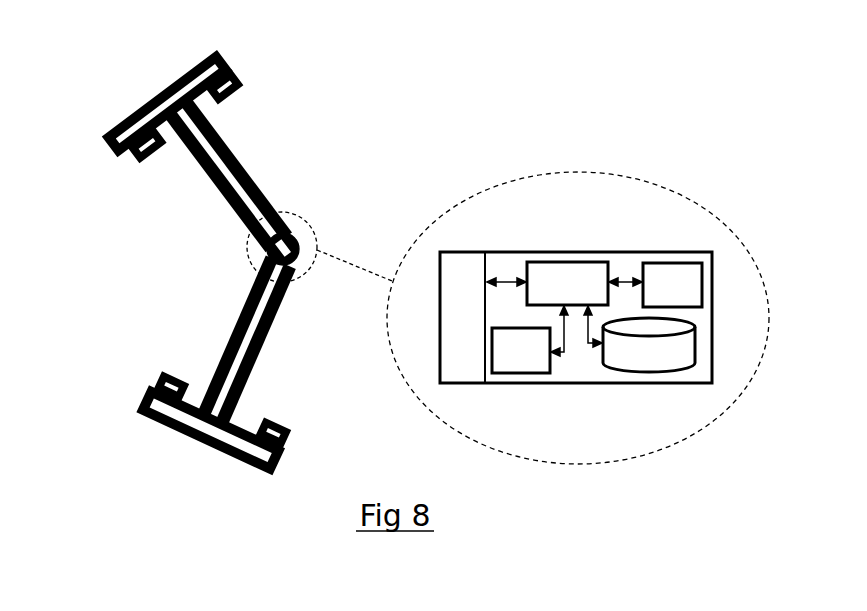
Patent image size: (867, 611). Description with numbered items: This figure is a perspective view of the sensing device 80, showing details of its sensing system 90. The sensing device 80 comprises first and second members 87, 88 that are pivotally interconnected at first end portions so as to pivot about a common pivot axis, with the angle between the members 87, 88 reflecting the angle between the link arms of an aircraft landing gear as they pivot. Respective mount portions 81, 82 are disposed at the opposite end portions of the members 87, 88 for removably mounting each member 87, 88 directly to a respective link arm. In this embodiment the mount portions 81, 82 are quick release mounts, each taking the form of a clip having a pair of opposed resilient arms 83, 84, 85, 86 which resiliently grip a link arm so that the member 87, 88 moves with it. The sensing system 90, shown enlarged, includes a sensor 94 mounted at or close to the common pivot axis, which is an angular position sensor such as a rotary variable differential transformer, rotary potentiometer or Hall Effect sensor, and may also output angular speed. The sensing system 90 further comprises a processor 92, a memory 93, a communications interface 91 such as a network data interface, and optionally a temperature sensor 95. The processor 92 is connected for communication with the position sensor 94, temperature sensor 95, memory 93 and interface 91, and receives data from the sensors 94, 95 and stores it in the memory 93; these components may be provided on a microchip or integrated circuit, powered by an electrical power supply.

The sensing device 80 is at (134, 236).
The mount portion 81 is at (148, 103).
The mount portion 82 is at (172, 420).
The resilient arm 83 is at (200, 72).
The resilient arm 84 is at (145, 147).
The resilient arm 85 is at (274, 462).
The resilient arm 86 is at (172, 383).
The first member 87 is at (233, 170).
The second member 88 is at (262, 343).
The sensing system 90 is at (288, 228).
The communications interface 91 is at (446, 318).
The processor 92 is at (556, 293).
The memory 93 is at (637, 360).
The sensor 94 is at (510, 362).
The temperature sensor 95 is at (661, 294).